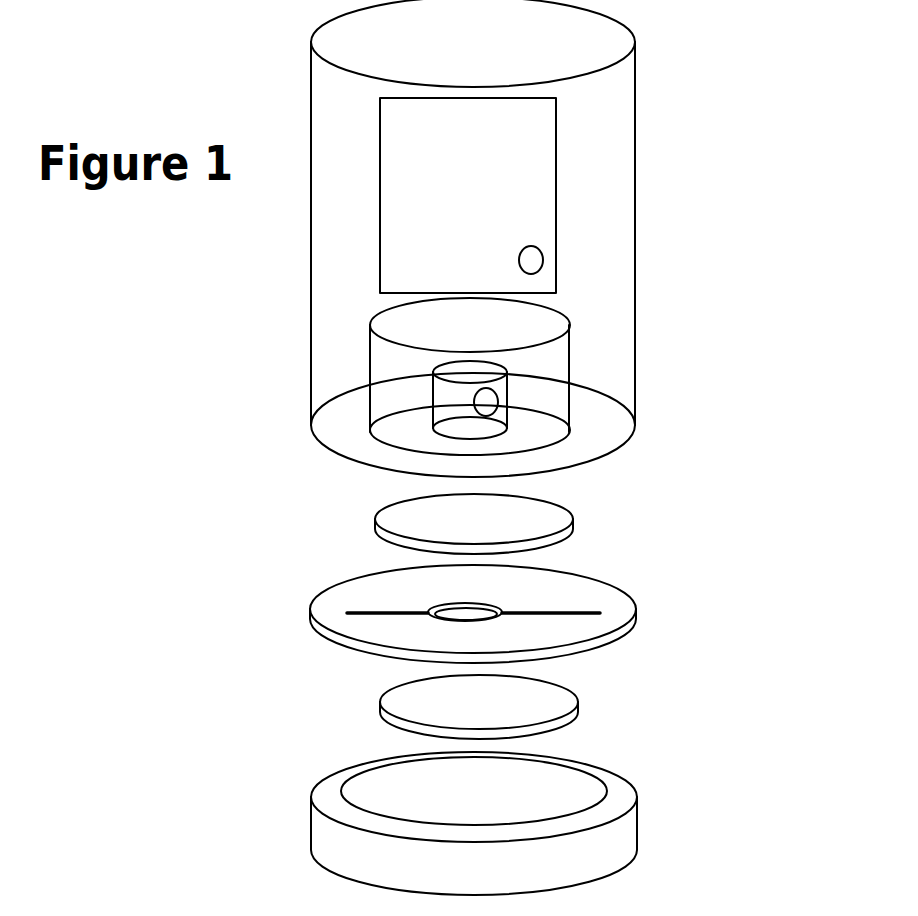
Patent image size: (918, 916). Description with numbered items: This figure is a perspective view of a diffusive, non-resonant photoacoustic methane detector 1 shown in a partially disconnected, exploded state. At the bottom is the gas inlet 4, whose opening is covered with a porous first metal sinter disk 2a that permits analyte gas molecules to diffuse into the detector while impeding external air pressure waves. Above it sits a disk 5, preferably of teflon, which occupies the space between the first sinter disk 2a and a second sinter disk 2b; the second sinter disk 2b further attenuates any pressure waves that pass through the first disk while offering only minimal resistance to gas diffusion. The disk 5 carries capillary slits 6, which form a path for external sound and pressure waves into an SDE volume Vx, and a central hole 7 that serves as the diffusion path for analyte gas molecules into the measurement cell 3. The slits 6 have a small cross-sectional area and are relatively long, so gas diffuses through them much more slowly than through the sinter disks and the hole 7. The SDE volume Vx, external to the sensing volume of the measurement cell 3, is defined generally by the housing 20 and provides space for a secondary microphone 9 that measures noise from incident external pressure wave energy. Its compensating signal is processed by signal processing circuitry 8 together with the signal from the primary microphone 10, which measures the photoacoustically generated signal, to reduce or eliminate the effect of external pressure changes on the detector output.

The photoacoustic detector 1 is at (842, 33).
The housing 20 is at (635, 108).
The signal processing circuitry 8 is at (472, 162).
The secondary microphone 9 is at (537, 262).
The SDE volume Vx is at (595, 192).
The measurement cell 3 is at (388, 387).
The primary microphone 10 is at (498, 400).
The second sinter disk 2b is at (572, 520).
The disk 5 is at (313, 603).
The capillary slits 6 is at (582, 610).
The hole 7 is at (463, 612).
The first sinter disk 2a is at (578, 705).
The gas inlet 4 is at (637, 808).